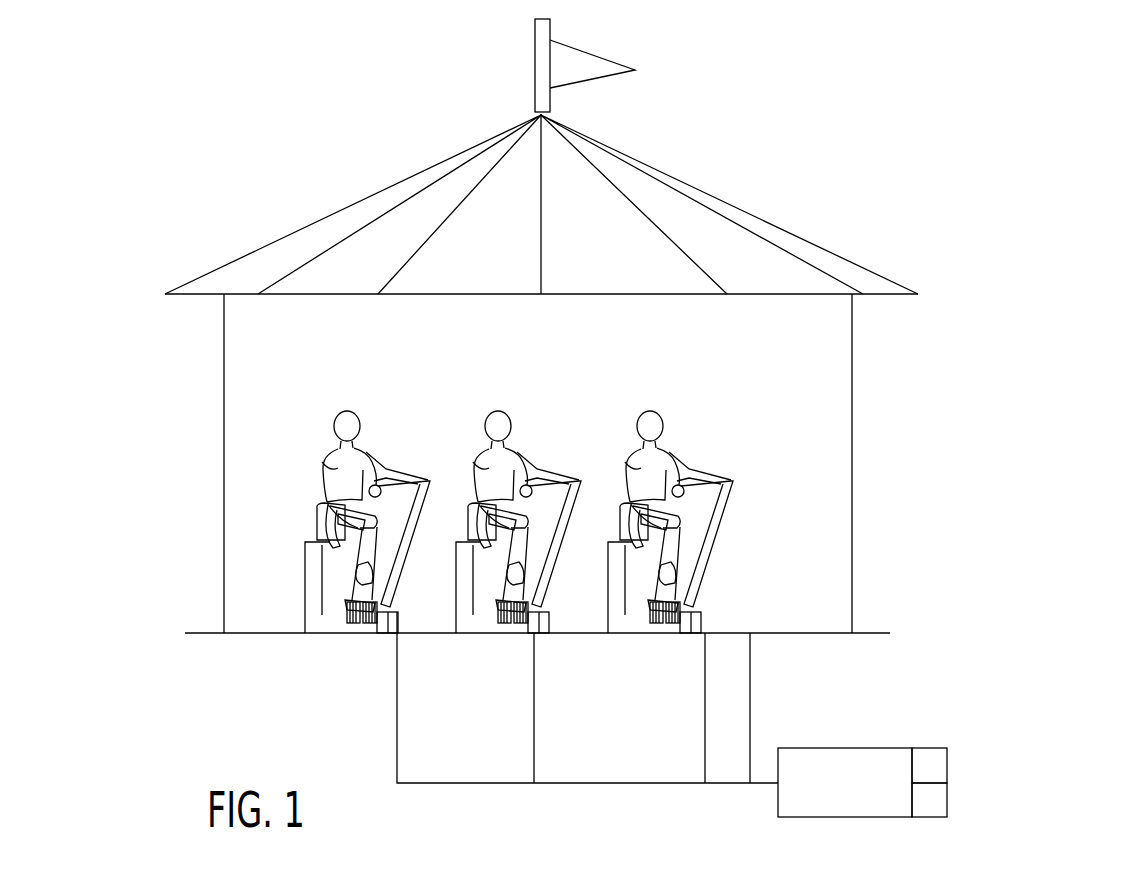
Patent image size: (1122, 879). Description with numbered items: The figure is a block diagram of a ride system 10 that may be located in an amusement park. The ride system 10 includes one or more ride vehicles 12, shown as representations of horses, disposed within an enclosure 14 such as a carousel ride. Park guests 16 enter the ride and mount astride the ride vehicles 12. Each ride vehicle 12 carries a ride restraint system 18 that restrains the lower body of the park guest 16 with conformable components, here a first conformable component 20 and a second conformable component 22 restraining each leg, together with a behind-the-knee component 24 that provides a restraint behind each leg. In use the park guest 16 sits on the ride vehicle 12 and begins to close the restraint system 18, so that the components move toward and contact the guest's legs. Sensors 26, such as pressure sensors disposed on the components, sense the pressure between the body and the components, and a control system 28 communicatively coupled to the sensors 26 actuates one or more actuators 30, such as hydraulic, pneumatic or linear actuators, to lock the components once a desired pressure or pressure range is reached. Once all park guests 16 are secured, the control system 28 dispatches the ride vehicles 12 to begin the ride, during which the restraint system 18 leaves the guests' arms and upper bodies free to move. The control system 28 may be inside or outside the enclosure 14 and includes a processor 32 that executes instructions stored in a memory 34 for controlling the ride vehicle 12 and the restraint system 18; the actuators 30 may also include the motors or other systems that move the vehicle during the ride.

The ride system 10 is at (1000, 377).
The ride vehicle 12 is at (322, 618).
The enclosure 14 is at (810, 248).
The park guest 16 is at (326, 454).
The ride restraint system 18 is at (333, 573).
The first conformable component 20 is at (352, 522).
The second conformable component 22 is at (363, 578).
The behind-the-knee component 24 is at (332, 540).
The sensor 26 is at (360, 632).
The control system 28 is at (843, 748).
The actuator 30 is at (375, 640).
The processor 32 is at (947, 766).
The memory 34 is at (947, 800).